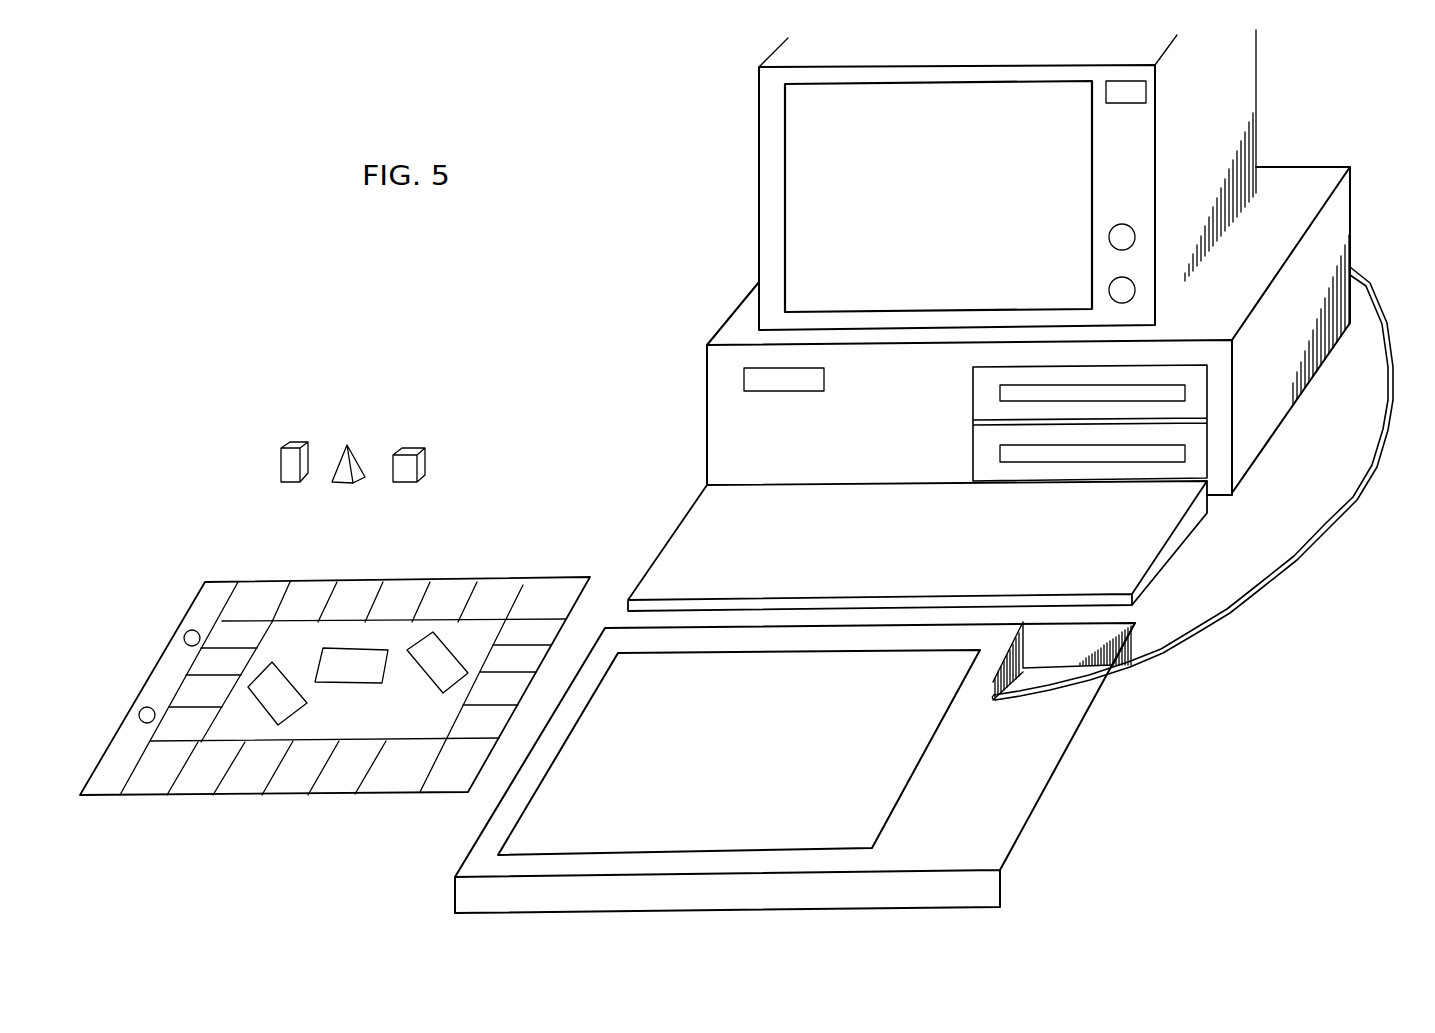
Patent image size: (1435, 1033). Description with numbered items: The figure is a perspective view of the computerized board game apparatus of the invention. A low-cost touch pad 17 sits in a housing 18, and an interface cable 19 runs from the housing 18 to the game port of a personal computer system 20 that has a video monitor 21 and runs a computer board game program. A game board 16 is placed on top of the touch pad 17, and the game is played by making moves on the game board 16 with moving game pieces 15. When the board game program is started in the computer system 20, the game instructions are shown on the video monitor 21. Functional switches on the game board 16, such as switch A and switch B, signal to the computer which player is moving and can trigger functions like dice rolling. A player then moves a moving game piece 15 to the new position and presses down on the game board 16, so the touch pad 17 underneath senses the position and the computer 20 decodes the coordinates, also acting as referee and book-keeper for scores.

The moving game piece 15 is at (288, 435).
The game board 16 is at (158, 623).
The touch pad 17 is at (585, 793).
The housing 18 is at (1078, 773).
The interface cable 19 is at (1303, 568).
The personal computer system 20 is at (673, 527).
The video monitor 21 is at (758, 143).